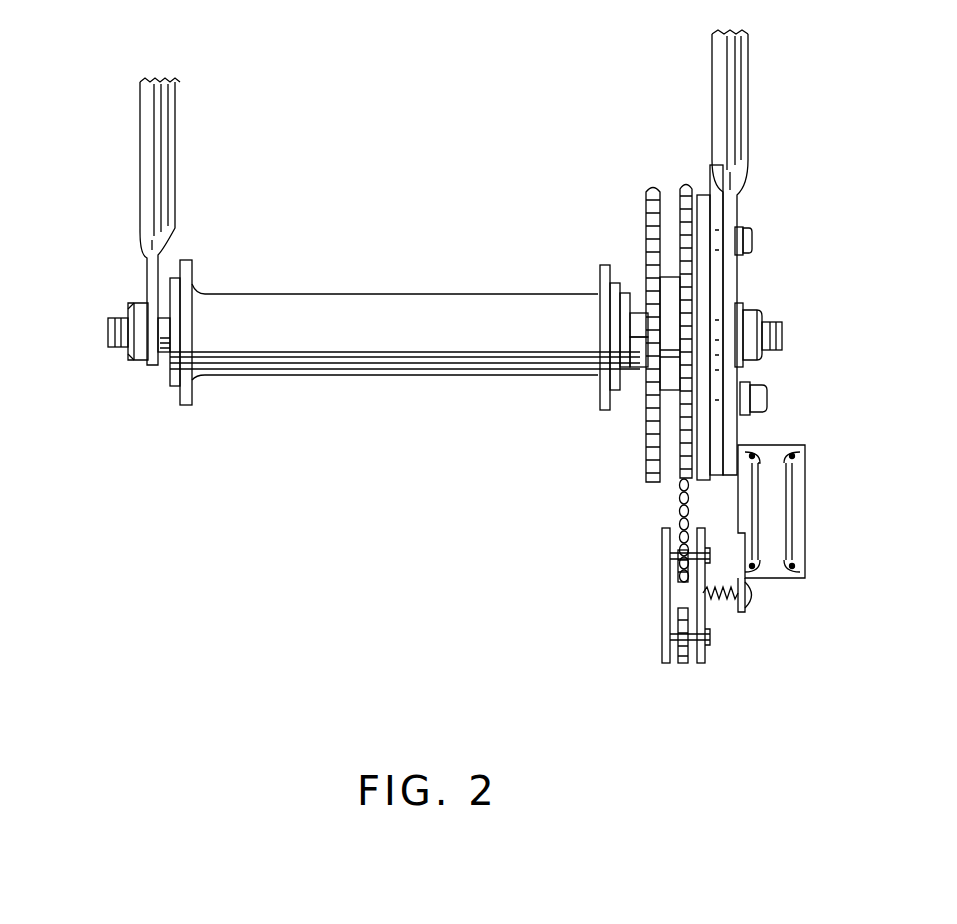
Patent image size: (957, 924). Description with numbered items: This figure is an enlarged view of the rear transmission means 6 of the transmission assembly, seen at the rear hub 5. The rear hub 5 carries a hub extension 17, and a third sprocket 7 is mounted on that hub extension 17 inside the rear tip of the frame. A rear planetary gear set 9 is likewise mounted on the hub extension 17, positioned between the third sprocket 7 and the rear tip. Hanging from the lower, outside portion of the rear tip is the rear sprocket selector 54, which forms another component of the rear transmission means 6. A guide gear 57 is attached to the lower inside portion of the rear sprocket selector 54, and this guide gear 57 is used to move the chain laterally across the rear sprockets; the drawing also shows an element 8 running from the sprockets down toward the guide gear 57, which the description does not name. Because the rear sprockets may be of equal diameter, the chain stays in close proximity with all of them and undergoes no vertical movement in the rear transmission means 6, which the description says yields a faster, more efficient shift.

The rear hub 5 is at (398, 306).
The rear transmission means 6 is at (640, 422).
The third sprocket 7 is at (652, 186).
The chain 8 is at (681, 468).
The rear planetary gear set 9 is at (691, 170).
The hub extension 17 is at (640, 325).
The rear sprocket selector 54 is at (816, 487).
The guide gear 57 is at (680, 664).